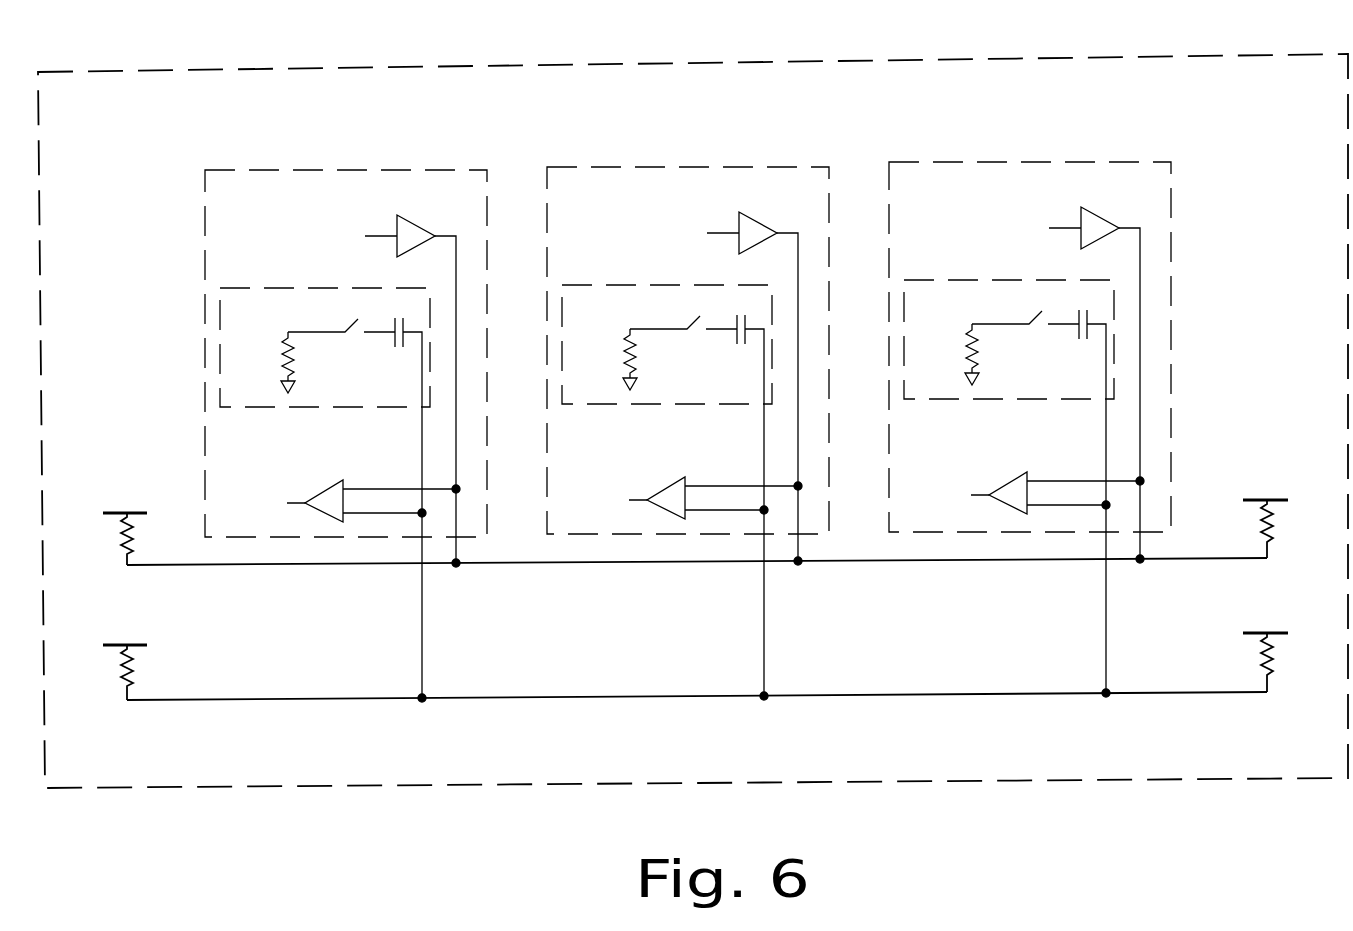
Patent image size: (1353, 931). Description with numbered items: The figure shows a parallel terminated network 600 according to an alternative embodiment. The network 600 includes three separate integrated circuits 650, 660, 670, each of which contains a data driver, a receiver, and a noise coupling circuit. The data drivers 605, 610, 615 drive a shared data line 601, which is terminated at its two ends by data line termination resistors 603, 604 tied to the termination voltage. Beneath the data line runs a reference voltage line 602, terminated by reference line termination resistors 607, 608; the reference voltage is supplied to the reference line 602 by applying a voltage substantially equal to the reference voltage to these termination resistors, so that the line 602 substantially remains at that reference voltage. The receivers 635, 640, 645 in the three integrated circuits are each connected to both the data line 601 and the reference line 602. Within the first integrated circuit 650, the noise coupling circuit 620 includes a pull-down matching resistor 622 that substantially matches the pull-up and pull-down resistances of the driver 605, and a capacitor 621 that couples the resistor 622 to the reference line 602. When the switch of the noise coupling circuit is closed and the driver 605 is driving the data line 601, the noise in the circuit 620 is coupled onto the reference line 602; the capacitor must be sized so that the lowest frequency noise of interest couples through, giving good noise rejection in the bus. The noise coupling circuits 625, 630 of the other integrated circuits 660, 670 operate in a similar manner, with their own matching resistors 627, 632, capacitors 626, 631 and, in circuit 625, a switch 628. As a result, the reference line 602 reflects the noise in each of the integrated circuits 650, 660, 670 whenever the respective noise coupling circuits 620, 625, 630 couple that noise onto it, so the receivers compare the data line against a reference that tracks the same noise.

The network 600 is at (377, 785).
The data line 601 is at (540, 564).
The reference voltage line 602 is at (545, 696).
The data line termination resistor 603 is at (136, 541).
The data line termination resistor 604 is at (1259, 526).
The data driver 605 is at (413, 226).
The reference line termination resistor 607 is at (136, 674).
The reference line termination resistor 608 is at (1259, 660).
The data driver 610 is at (765, 374).
The data driver 615 is at (1107, 370).
The noise coupling circuit 620 is at (325, 407).
The capacitor 621 is at (395, 338).
The resistor Rdn" 622 is at (282, 351).
The noise coupling circuit 625 is at (667, 490).
The capacitor 626 is at (738, 505).
The resistor Rdn" 627 is at (630, 359).
The switch 628 is at (675, 313).
The noise coupling circuit 630 is at (1009, 486).
The capacitor 631 is at (1080, 501).
The resistor Rdn" 632 is at (972, 354).
The receiver 635 is at (326, 492).
The receiver 640 is at (699, 490).
The receiver 645 is at (1041, 485).
The integrated circuit 650 is at (321, 171).
The integrated circuit 660 is at (688, 413).
The integrated circuit 670 is at (1030, 409).